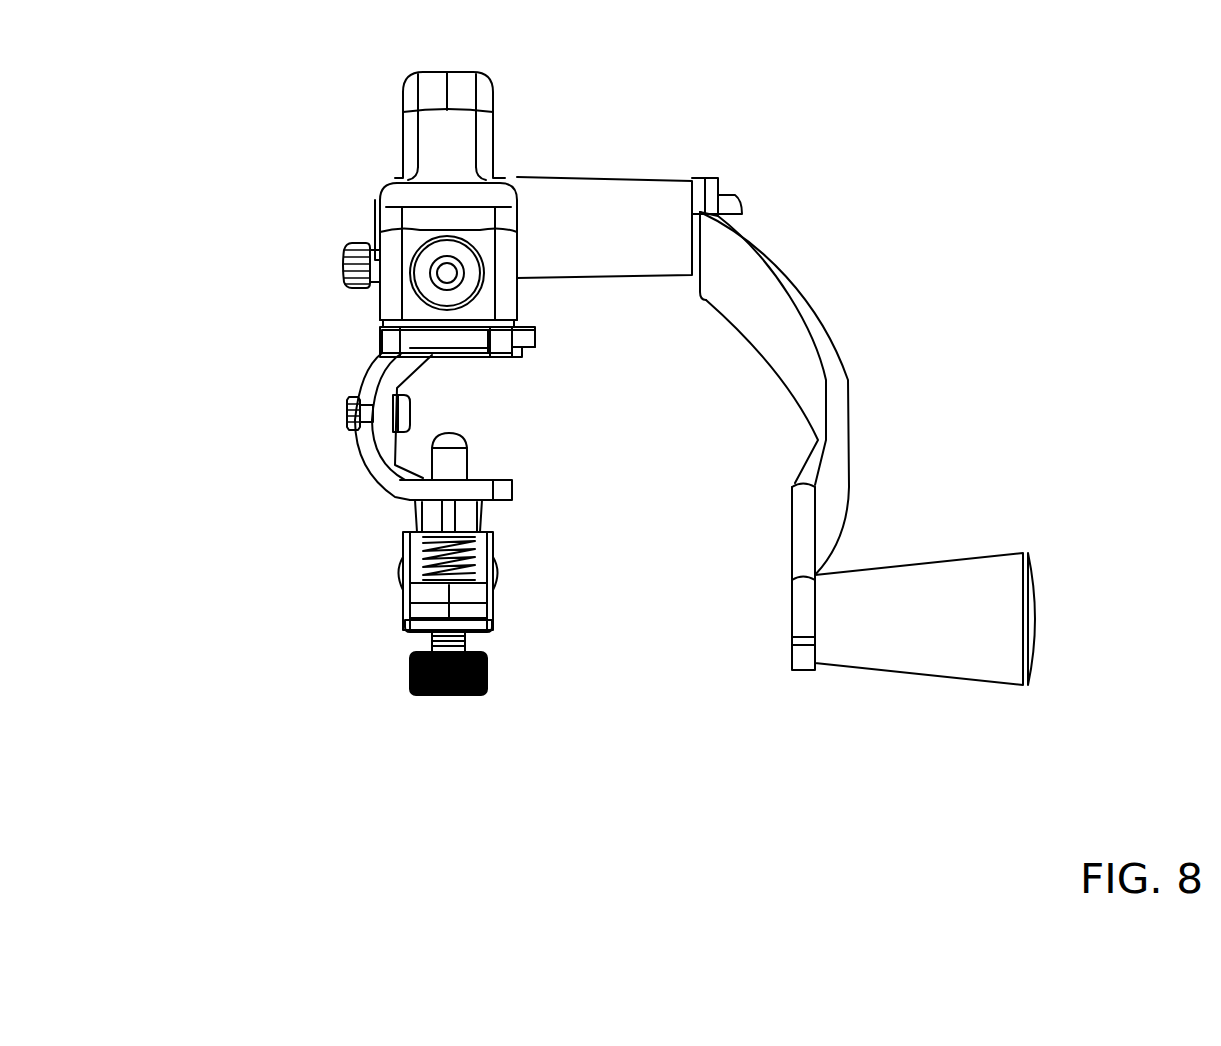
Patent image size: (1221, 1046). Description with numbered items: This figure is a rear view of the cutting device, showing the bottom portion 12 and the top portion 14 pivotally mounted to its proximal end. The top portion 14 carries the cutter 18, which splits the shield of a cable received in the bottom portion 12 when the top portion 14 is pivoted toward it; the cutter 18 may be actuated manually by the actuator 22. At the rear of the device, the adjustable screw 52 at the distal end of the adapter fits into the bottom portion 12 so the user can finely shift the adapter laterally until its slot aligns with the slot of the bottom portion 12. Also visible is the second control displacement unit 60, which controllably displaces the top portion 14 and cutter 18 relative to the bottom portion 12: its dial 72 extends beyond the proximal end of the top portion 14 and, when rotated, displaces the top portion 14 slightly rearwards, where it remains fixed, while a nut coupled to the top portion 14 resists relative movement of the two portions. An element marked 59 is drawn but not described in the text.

The cutter 18 is at (498, 88).
The dial 72 is at (417, 290).
The top portion 14 is at (545, 308).
The inner button 59 is at (412, 417).
The adjustable screw 52 is at (340, 418).
The bottom portion 12 is at (525, 472).
The actuator 22 is at (920, 575).
The second control displacement unit 60 is at (313, 695).